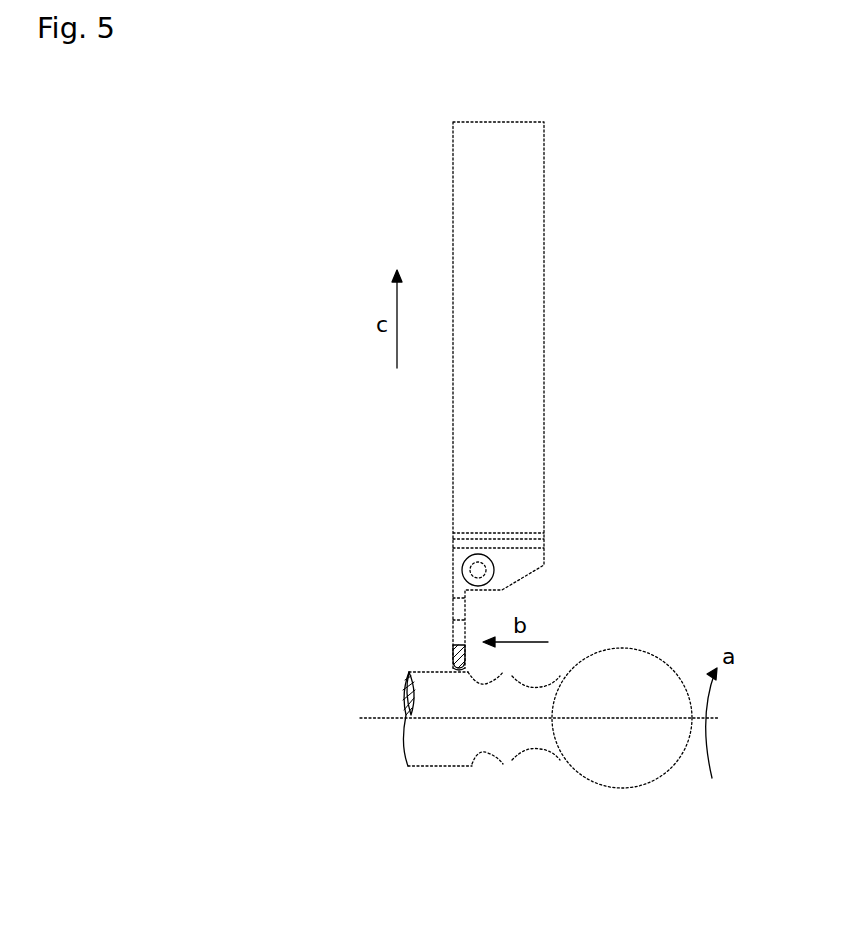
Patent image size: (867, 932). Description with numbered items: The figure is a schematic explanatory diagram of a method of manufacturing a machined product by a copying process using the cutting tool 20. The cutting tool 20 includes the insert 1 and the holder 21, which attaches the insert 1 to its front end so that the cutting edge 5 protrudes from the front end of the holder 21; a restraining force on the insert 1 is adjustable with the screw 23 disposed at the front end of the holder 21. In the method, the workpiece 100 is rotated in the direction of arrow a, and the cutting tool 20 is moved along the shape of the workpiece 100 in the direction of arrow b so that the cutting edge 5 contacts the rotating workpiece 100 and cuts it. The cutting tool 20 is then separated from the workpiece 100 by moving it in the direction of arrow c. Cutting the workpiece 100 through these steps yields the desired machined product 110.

The cutting tool 20 is at (465, 457).
The holder 21 is at (453, 440).
The screw 23 is at (466, 566).
The insert 1 is at (451, 665).
The cutting edge 5 is at (458, 672).
The workpiece 100 is at (540, 772).
The machined product 110 is at (623, 767).